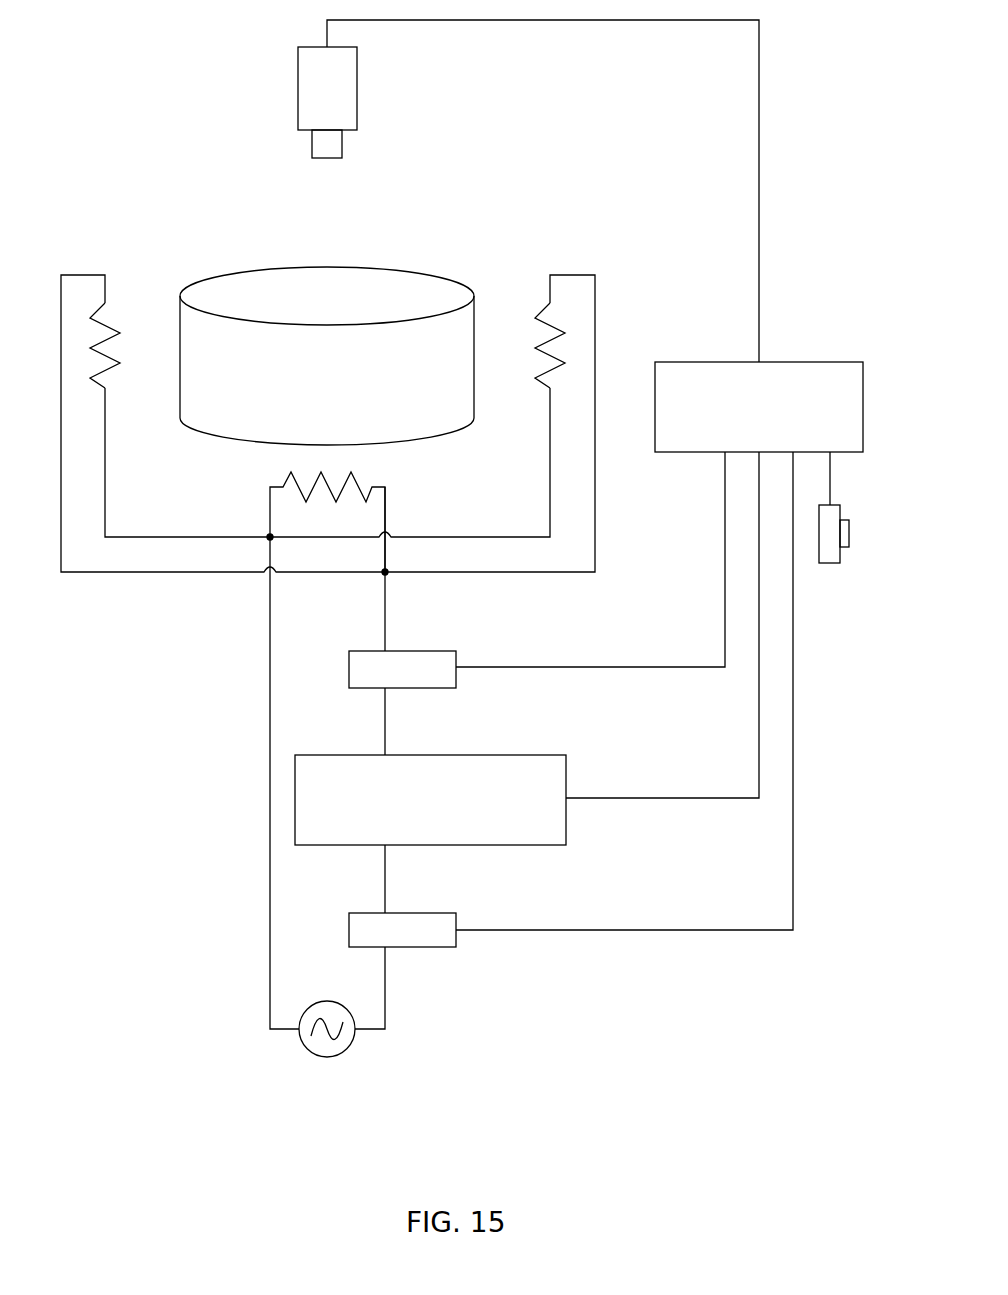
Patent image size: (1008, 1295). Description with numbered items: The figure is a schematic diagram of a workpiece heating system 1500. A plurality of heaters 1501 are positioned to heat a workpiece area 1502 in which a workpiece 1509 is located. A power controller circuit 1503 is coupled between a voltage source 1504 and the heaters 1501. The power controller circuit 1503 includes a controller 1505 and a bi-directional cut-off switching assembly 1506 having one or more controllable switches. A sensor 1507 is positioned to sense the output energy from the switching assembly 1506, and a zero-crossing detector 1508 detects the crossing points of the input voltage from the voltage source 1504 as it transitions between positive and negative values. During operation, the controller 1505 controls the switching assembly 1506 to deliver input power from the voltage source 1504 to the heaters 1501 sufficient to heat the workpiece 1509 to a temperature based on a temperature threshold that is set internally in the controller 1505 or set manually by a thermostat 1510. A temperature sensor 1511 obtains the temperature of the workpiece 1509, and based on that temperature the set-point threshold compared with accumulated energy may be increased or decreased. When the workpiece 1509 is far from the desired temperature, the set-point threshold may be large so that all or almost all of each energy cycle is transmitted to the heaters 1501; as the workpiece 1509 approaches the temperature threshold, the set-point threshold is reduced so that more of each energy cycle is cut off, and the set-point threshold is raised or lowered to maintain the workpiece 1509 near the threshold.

The workpiece heating system 1500 is at (230, 65).
The heaters 1501 is at (108, 303).
The workpiece area 1502 is at (463, 216).
The power controller circuit 1503 is at (679, 982).
The voltage source 1504 is at (350, 1045).
The controller 1505 is at (727, 362).
The bi-directional cut-off switching assembly 1506 is at (472, 845).
The sensor 1507 is at (420, 688).
The zero-crossing detector 1508 is at (420, 947).
The workpiece 1509 is at (264, 296).
The thermostat 1510 is at (830, 563).
The temperature sensor 1511 is at (357, 104).